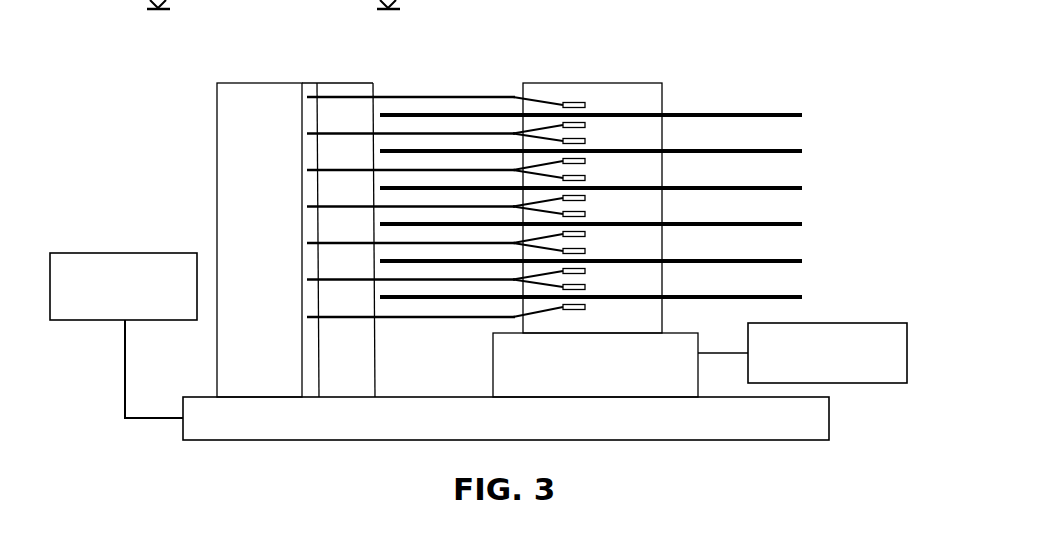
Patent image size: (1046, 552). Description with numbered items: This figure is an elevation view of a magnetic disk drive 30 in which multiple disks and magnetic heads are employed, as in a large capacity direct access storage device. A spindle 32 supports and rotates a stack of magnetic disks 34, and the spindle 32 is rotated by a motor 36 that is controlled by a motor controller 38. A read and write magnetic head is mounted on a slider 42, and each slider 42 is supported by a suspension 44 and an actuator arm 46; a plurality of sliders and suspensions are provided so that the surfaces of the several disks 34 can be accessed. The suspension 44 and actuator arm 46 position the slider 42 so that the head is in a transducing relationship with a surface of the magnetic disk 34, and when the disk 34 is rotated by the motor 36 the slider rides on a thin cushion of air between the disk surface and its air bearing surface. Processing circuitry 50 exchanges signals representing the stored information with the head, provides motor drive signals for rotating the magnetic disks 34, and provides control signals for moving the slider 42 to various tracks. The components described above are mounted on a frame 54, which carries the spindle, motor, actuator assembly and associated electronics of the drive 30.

The magnetic disk drive 30 is at (742, 79).
The spindle 32 is at (645, 83).
The magnetic disk 34 is at (802, 115).
The motor 36 is at (610, 376).
The motor controller 38 is at (865, 383).
The slider 42 is at (587, 122).
The suspension 44 is at (552, 135).
The actuator arm 46 is at (490, 132).
The processing circuitry 50 is at (96, 253).
The frame 54 is at (238, 441).